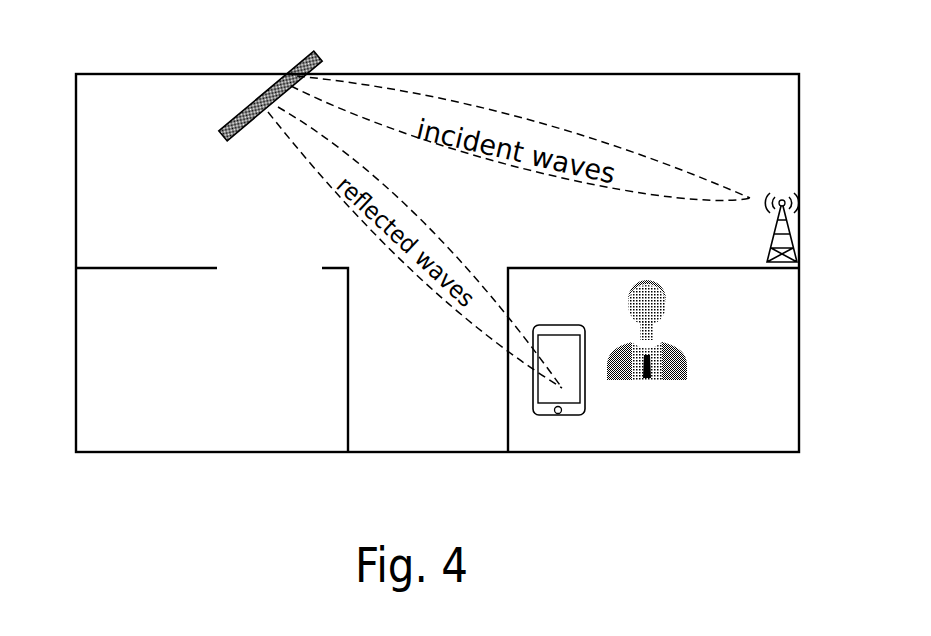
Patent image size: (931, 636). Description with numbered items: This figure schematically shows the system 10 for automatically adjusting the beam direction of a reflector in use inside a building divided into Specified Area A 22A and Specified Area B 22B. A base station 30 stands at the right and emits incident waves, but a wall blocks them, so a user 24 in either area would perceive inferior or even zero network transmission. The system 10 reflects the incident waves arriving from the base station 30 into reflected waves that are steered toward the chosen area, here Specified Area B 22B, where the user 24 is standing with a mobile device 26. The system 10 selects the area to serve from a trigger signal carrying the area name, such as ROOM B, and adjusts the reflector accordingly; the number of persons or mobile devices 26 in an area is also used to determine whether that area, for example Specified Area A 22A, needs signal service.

The system for automatically adjusting the beam direction of a reflector 10 is at (253, 87).
The Specified Area A 22A is at (197, 453).
The Specified Area B 22B is at (677, 453).
The user 24 is at (667, 342).
The mobile device 26 is at (533, 370).
The base station 30 is at (793, 240).